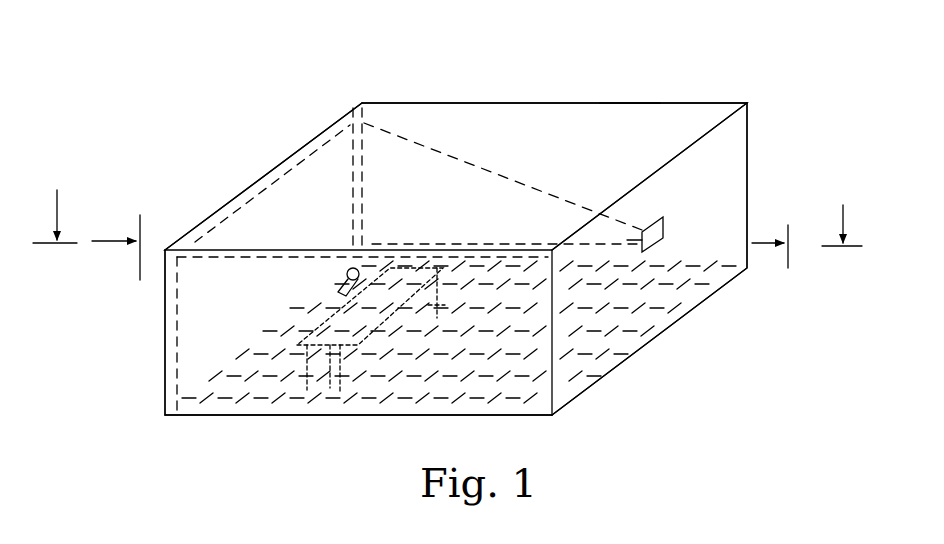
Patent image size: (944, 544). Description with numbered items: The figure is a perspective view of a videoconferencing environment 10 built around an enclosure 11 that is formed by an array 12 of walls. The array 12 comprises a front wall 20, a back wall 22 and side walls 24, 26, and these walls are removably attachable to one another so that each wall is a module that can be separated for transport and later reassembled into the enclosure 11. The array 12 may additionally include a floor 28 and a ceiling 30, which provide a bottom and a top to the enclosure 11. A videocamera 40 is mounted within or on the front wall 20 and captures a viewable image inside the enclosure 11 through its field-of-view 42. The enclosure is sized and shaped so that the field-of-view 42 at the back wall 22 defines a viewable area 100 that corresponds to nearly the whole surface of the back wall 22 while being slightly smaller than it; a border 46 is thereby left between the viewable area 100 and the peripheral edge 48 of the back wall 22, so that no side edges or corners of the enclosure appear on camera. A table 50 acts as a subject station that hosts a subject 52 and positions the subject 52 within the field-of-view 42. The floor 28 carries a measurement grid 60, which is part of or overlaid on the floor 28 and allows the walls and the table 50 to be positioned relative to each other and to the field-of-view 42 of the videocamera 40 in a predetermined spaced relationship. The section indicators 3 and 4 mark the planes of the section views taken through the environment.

The videoconferencing environment 10 is at (410, 57).
The enclosure 11 is at (634, 100).
The array of walls 12 is at (690, 127).
The front wall 20 is at (737, 155).
The back wall 22 is at (232, 201).
The side wall 24 is at (552, 103).
The side wall 26 is at (190, 318).
The floor 28 is at (613, 363).
The ceiling 30 is at (656, 141).
The videocamera 40 is at (662, 238).
The field-of-view 42 is at (468, 160).
The border 46 is at (328, 129).
The peripheral edge 48 is at (165, 374).
The table 50 is at (337, 350).
The subject 52 is at (352, 284).
The measurement grid 60 is at (657, 328).
The viewable area 100 is at (292, 167).
The section line 3- 3 is at (447, 204).
The section line 4- 4 is at (442, 259).